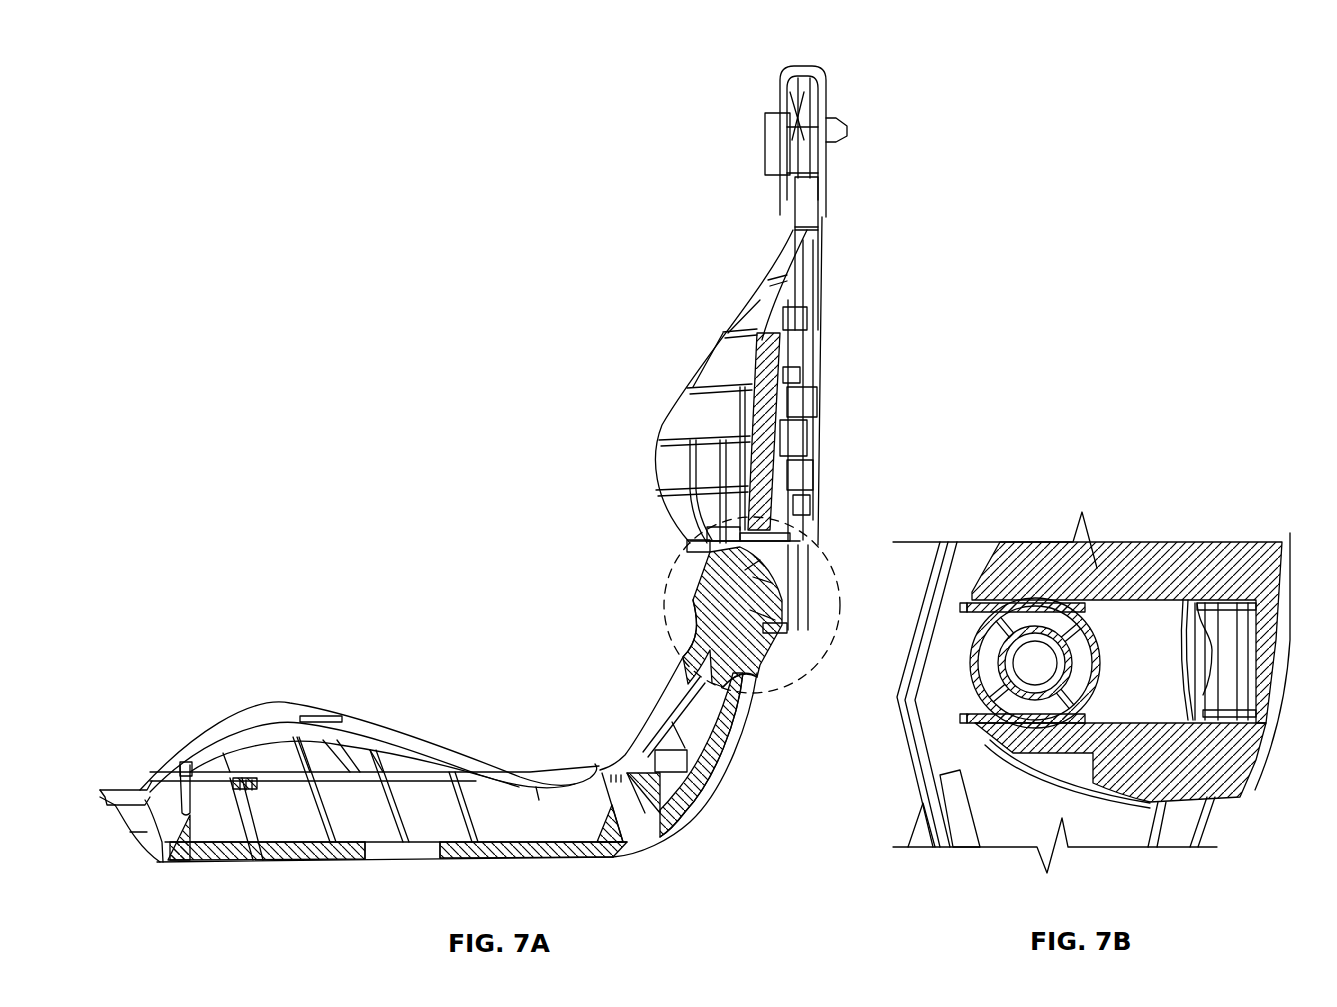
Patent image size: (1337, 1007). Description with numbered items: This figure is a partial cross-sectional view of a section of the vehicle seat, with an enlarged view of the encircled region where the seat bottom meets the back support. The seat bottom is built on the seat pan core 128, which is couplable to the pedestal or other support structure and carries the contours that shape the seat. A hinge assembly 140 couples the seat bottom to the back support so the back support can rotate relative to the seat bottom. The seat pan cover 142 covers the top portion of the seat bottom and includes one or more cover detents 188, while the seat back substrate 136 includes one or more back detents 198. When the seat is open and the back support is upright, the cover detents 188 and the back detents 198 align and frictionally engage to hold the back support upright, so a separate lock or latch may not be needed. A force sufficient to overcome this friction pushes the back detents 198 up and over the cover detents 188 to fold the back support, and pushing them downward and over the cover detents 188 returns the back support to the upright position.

In FIG. 7A, the seat pan core 128 is at (387, 727).
In FIG. 7A, the seat back substrate 136 is at (812, 185).
In FIG. 7B, the seat back substrate 136 is at (1180, 560).
In FIG. 7B, the hinge assembly 140 is at (970, 647).
In FIG. 7A, the seat pan cover 142 is at (690, 596).
In FIG. 7B, the seat pan cover 142 is at (1195, 704).
In FIG. 7B, the cover detent 188 is at (1203, 638).
In FIG. 7B, the back detent 198 is at (1213, 672).